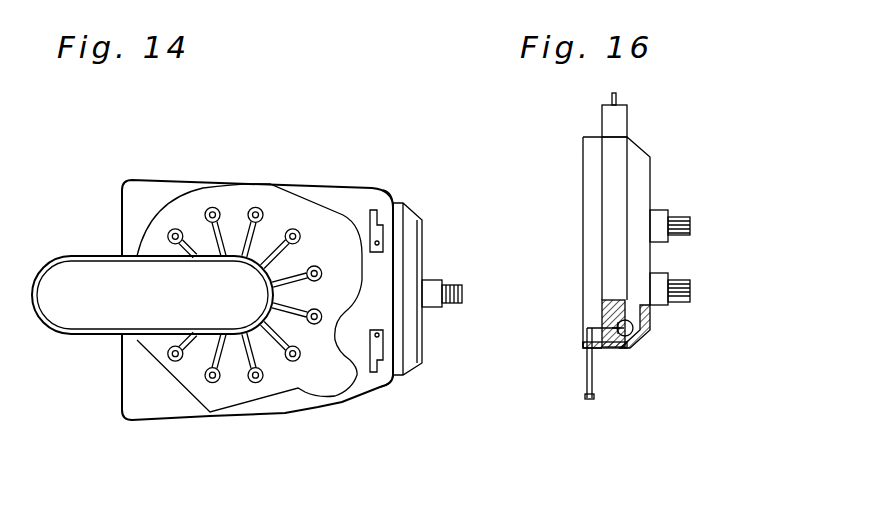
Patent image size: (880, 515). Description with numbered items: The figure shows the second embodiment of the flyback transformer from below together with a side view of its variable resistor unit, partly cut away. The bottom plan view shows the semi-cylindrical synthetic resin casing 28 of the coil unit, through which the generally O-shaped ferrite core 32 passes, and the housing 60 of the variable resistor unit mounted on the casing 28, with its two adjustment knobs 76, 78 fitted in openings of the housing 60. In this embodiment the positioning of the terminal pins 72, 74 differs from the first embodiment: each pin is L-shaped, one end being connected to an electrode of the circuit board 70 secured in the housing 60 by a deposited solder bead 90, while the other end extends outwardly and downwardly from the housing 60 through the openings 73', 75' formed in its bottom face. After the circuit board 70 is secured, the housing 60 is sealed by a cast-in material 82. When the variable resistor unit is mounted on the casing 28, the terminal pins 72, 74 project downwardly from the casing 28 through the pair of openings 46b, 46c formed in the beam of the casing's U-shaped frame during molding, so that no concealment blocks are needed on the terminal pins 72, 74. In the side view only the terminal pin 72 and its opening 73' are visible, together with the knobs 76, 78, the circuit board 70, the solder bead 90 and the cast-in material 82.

In FIG. 14, the casing 28 is at (275, 418).
In FIG. 14, the ferrite core 32 is at (80, 305).
In FIG. 14, the housing 60 is at (417, 250).
In FIG. 16, the housing 60 is at (640, 162).
In FIG. 14, the terminal pin 72 is at (373, 210).
In FIG. 16, the terminal pin 72 is at (592, 385).
In FIG. 14, the opening 73' is at (346, 246).
In FIG. 16, the opening 73' is at (561, 399).
In FIG. 14, the terminal pin 74 is at (383, 340).
In FIG. 14, the opening 75' is at (345, 361).
In FIG. 16, the adjustment knob 76 is at (690, 222).
In FIG. 14, the adjustment knob 78 is at (463, 292).
In FIG. 16, the adjustment knob 78 is at (690, 290).
In FIG. 14, the opening 46b is at (393, 218).
In FIG. 14, the opening 46c is at (378, 372).
In FIG. 16, the circuit board 70 is at (645, 323).
In FIG. 16, the cast-in material 82 is at (600, 315).
In FIG. 16, the solder bead 90 is at (640, 337).